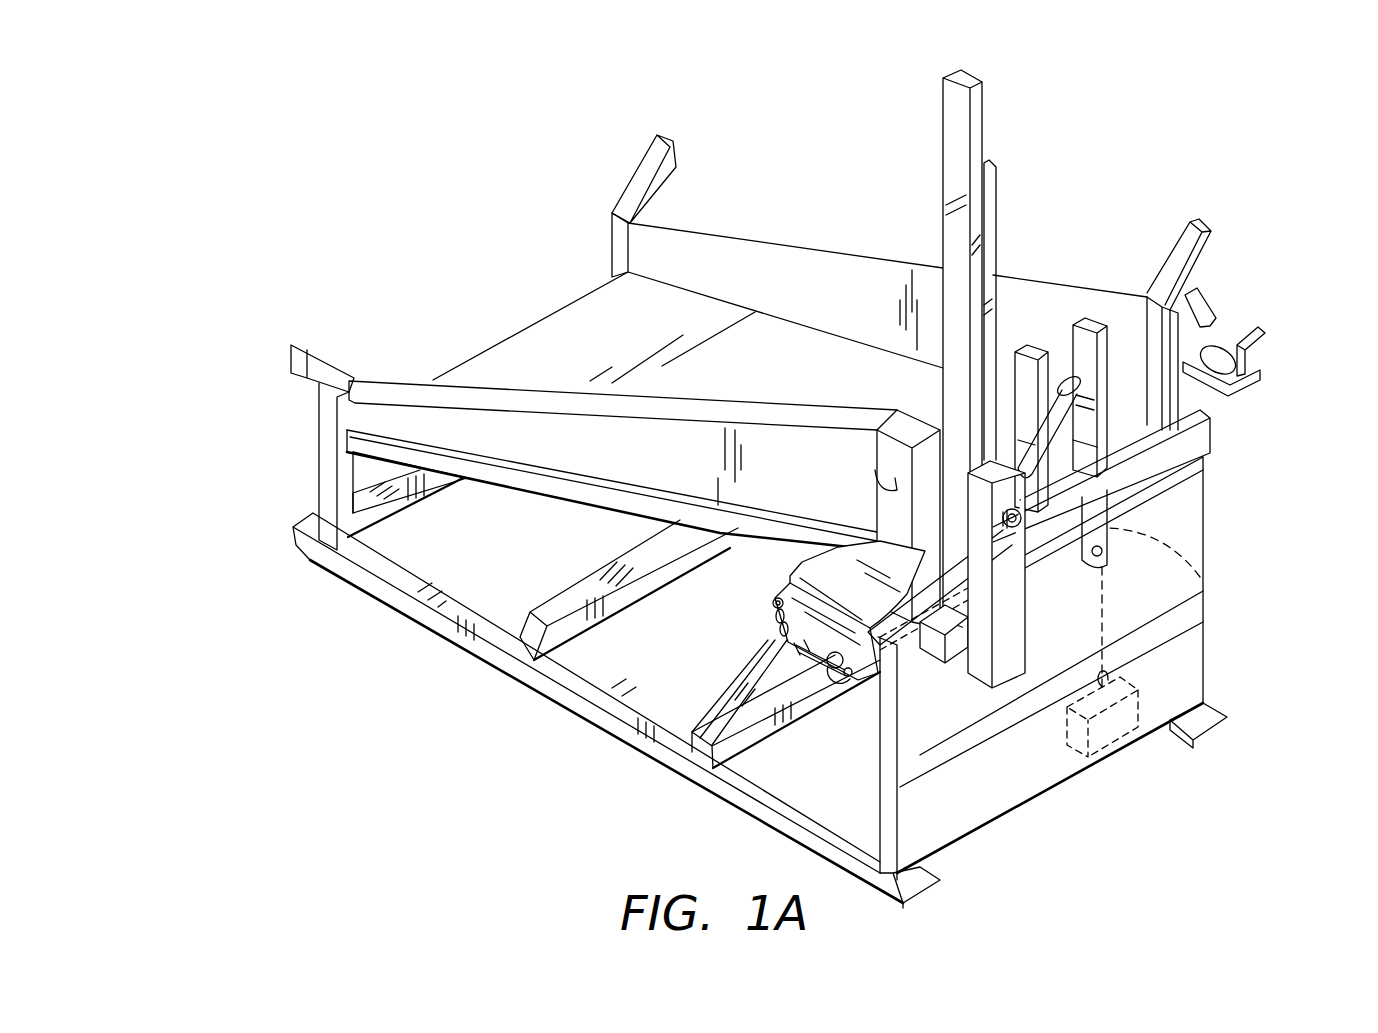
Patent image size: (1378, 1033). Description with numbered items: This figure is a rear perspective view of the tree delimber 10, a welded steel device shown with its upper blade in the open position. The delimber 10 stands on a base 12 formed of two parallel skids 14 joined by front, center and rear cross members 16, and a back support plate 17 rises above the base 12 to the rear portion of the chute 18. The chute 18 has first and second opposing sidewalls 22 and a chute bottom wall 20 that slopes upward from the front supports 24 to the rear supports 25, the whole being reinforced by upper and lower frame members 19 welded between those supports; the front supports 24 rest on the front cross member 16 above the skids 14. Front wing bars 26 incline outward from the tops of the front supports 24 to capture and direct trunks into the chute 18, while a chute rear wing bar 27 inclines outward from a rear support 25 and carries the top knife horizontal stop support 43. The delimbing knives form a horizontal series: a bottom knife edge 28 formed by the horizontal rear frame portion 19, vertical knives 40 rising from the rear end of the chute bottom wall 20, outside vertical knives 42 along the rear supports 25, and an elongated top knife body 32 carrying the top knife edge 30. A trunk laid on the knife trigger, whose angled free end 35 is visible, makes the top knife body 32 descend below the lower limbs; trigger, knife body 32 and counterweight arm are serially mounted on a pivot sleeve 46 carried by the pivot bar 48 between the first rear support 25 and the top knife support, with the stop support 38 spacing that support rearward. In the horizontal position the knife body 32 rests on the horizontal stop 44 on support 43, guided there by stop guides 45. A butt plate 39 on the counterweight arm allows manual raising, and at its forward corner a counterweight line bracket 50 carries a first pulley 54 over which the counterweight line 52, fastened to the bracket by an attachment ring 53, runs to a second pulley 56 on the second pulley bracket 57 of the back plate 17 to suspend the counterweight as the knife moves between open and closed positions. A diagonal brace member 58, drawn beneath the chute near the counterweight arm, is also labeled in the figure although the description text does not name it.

The delimber 10 is at (1247, 153).
The base 12 is at (556, 754).
The skids 14 is at (405, 612).
The cross members 16 is at (385, 515).
The back support plate 17 is at (959, 800).
The chute 18 is at (760, 210).
The frame members 19 is at (497, 393).
The chute bottom wall 20 is at (614, 325).
The sidewalls 22 is at (829, 293).
The front supports 24 is at (325, 485).
The rear supports 25 is at (896, 465).
The front wing bars 26 is at (653, 160).
The chute rear wing bar 27 is at (1190, 237).
The bottom knife edge 28 is at (1145, 460).
The top knife edge 30 is at (990, 190).
The top knife body 32 is at (945, 108).
The angled free end 35 is at (1075, 420).
The stop support 38 is at (957, 590).
The butt plate 39 is at (824, 588).
The vertical knives 40 is at (1030, 362).
The outside vertical knives 42 is at (1143, 365).
The top knife horizontal stop support 43 is at (1213, 393).
The horizontal stop 44 is at (1222, 352).
The stop guides 45 is at (1208, 312).
The pivot sleeve 46 is at (882, 528).
The pivot bar 48 is at (1018, 522).
The counterweight line bracket 50 is at (775, 598).
The counterweight line 52 is at (794, 647).
The attachment ring 53 is at (768, 613).
The first pulley 54 is at (823, 673).
The second pulley 56 is at (1080, 553).
The second pulley bracket 57 is at (1200, 577).
The brace 58 is at (695, 733).